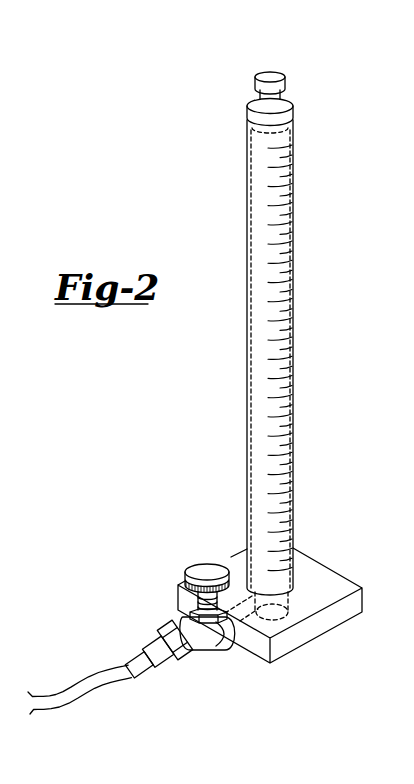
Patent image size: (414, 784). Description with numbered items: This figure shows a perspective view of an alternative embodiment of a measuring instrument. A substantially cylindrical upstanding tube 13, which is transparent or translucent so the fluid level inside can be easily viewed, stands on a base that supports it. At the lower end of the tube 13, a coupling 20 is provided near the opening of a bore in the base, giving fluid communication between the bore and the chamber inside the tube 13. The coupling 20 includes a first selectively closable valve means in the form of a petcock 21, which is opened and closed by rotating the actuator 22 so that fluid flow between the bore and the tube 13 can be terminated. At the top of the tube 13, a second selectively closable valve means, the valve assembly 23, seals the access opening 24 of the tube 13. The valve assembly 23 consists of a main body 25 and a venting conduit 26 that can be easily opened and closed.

The upstanding tube 13 is at (257, 348).
The coupling 20 is at (178, 623).
The petcock 21 is at (225, 633).
The actuator 22 is at (207, 572).
The valve assembly 23 is at (286, 70).
The access opening 24 is at (293, 117).
The main body 25 is at (250, 103).
The venting conduit 26 is at (269, 78).